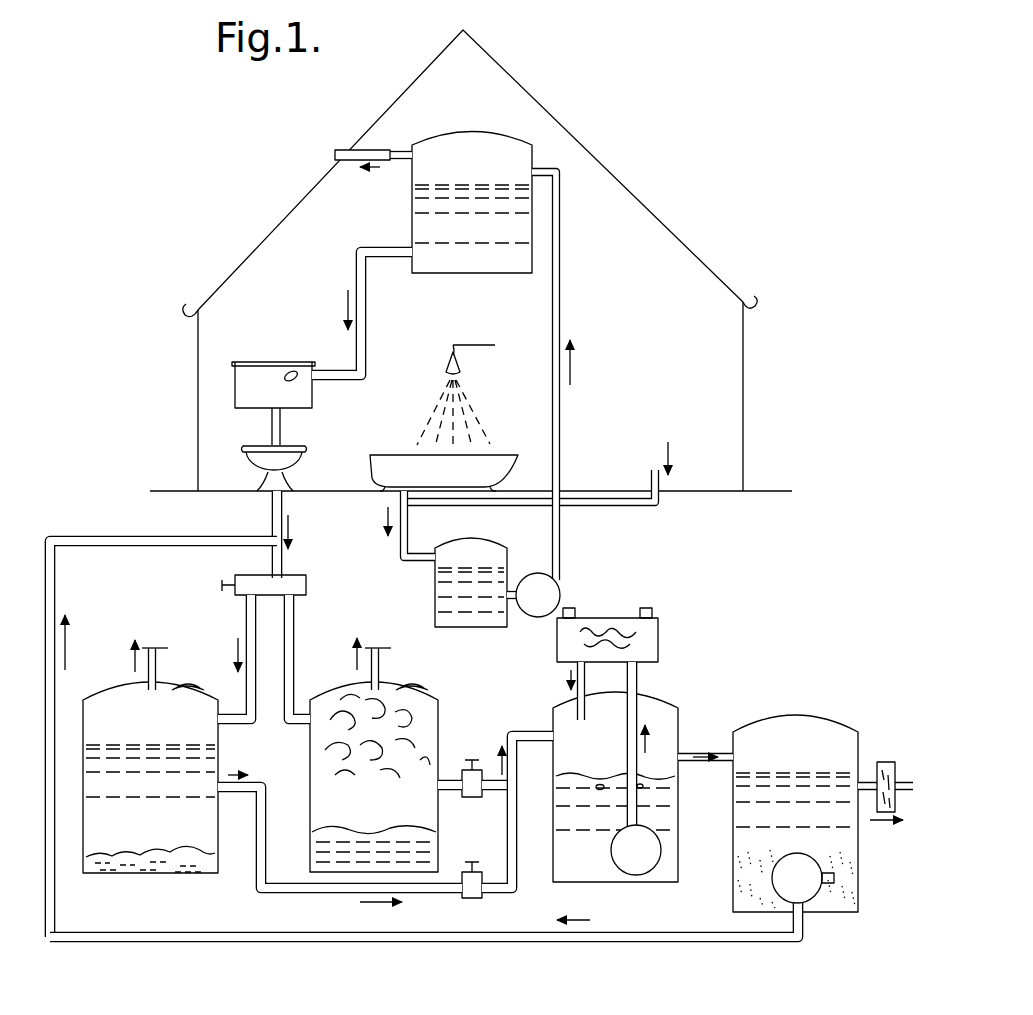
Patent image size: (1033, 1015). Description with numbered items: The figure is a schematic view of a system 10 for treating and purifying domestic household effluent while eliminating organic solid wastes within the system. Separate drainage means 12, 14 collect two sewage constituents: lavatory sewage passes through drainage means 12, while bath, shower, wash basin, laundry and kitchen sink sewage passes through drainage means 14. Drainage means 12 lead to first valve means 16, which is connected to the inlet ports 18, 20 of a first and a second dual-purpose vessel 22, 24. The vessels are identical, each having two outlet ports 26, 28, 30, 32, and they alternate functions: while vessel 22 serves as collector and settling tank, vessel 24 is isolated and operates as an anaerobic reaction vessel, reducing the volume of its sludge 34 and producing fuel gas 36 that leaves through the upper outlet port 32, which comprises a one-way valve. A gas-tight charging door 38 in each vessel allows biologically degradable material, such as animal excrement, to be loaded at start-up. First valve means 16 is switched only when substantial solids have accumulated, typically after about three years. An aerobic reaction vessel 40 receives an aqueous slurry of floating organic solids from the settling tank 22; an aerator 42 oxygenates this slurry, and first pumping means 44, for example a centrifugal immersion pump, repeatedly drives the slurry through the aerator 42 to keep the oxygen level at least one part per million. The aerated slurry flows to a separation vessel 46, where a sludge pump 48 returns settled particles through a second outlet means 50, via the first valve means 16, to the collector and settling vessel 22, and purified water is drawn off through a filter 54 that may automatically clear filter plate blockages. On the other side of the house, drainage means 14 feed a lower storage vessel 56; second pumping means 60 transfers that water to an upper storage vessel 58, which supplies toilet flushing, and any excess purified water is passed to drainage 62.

The system 10 is at (742, 557).
The drainage means 12 is at (283, 515).
The drainage means 14 is at (652, 484).
The first valve means 16 is at (298, 576).
The inlet port 18 is at (240, 730).
The inlet port 20 is at (296, 728).
The first dual-purpose vessel 22 is at (108, 692).
The second dual-purpose vessel 24 is at (312, 800).
The outlet port 26 is at (238, 796).
The outlet port 28 is at (450, 783).
The outlet port 30 is at (160, 660).
The upper outlet port 32 is at (380, 660).
The sludge 34 is at (196, 872).
The fuel gas 36 is at (352, 700).
The gas-tight charging door 38 is at (180, 688).
The aerobic reaction vessel 40 is at (678, 707).
The aerator 42 is at (650, 622).
The first pumping means 44 is at (652, 868).
The separation vessel 46 is at (773, 718).
The sludge pump 48 is at (775, 874).
The second outlet means 50 is at (866, 783).
The filter 54 is at (887, 762).
The lower storage vessel 56 is at (498, 552).
The upper storage vessel 58 is at (492, 146).
The second pumping means 60 is at (560, 394).
The drainage 62 is at (340, 150).